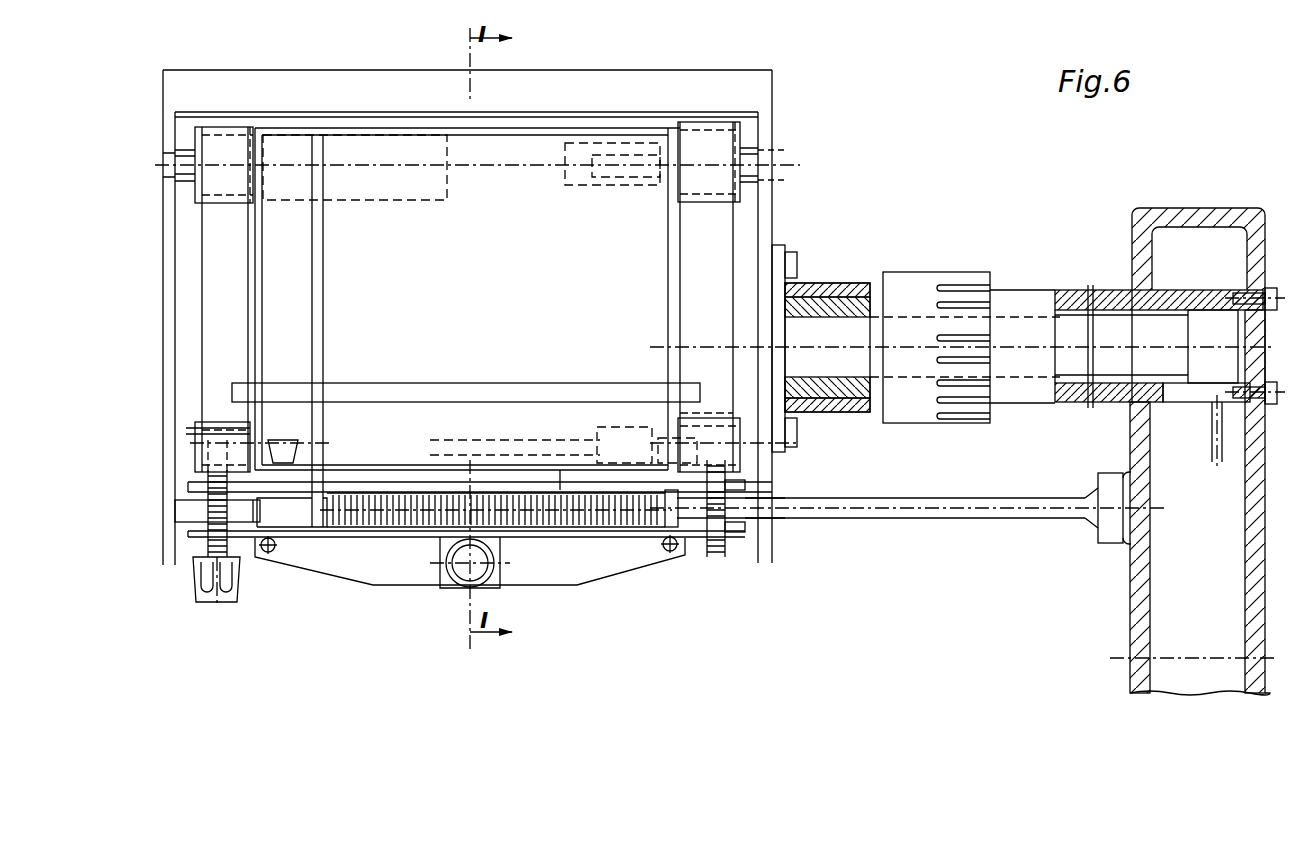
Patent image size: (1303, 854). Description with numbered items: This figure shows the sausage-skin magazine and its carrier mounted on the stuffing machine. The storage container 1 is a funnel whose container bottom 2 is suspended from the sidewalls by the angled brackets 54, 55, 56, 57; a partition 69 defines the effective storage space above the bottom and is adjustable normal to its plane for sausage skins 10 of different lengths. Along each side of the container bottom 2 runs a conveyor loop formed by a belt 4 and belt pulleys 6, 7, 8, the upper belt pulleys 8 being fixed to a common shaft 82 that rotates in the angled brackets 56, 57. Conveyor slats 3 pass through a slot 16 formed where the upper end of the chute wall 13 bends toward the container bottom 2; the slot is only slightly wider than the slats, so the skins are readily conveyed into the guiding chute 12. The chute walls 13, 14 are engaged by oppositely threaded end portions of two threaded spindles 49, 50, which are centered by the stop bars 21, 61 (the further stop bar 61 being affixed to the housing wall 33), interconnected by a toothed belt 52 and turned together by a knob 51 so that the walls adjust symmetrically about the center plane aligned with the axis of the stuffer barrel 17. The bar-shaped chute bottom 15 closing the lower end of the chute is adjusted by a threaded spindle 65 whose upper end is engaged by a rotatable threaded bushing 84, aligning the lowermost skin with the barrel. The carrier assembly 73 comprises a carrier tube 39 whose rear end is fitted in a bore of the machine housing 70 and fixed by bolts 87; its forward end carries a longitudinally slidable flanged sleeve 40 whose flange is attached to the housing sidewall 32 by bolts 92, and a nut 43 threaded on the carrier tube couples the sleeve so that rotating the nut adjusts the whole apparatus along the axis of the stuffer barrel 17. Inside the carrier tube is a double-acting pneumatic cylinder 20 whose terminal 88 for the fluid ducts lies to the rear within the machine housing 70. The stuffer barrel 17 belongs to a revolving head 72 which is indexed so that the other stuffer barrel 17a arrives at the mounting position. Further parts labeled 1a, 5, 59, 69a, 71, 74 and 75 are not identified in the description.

The storage container 1 is at (550, 128).
The frame side member 1a is at (670, 262).
The container bottom 2 is at (465, 300).
The conveyor slats 3 is at (347, 395).
The belt 4 is at (212, 255).
The guide rod 5 is at (341, 150).
The belt pulley 6 is at (228, 140).
The belt pulley 7 is at (705, 135).
The upper belt pulley 8 is at (212, 440).
The sausage skins 10 is at (360, 536).
The guiding chute 12 is at (567, 550).
The chute wall 13 is at (553, 490).
The chute wall 14 is at (388, 536).
The chute bottom 15 is at (627, 570).
The slot 16 is at (408, 470).
The stuffer barrel 17 is at (851, 520).
The other stuffer barrel 17a is at (868, 708).
The double-acting pneumatic cylinder 20 is at (1066, 320).
The stop bar 21 is at (749, 522).
The housing sidewall 32 is at (765, 106).
The housing wall 33 is at (170, 100).
The carrier tube 39 is at (838, 284).
The flanged sleeve 40 is at (855, 292).
The nut 43 is at (931, 290).
The threaded spindle 49 is at (215, 470).
The threaded spindle 50 is at (713, 558).
The knob 51 is at (231, 600).
The toothed belt 52 is at (282, 445).
The angled bracket 54 is at (200, 142).
The angled bracket 55 is at (200, 425).
The angled bracket 56 is at (765, 132).
The angled bracket 57 is at (760, 428).
The slide piece 59 is at (615, 152).
The further stop bar 61 is at (182, 512).
The threaded spindle 65 is at (470, 563).
The partition 69 is at (322, 250).
The rod end 69a is at (318, 525).
The machine housing 70 is at (1199, 196).
The post 71 is at (1192, 664).
The revolving head 72 is at (1140, 572).
The carrier assembly 73 is at (1030, 204).
The direction arrow 74 is at (778, 64).
The direction arrow 75 is at (690, 66).
The common shaft 82 is at (510, 440).
The threaded bushing 84 is at (460, 576).
The bolts 87 is at (1236, 296).
The terminal 88 is at (1196, 335).
The bolts 92 is at (798, 258).